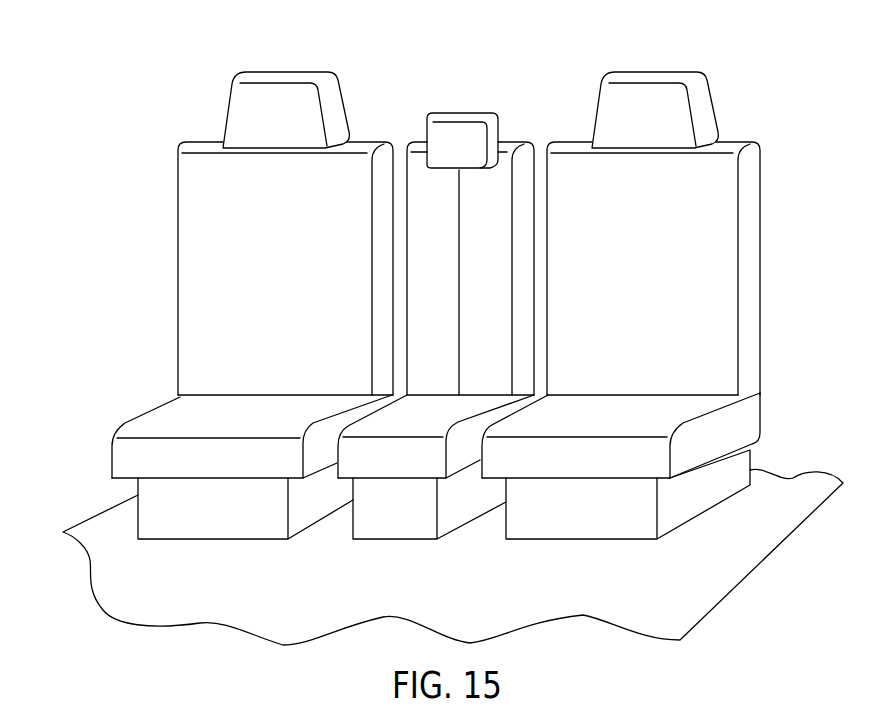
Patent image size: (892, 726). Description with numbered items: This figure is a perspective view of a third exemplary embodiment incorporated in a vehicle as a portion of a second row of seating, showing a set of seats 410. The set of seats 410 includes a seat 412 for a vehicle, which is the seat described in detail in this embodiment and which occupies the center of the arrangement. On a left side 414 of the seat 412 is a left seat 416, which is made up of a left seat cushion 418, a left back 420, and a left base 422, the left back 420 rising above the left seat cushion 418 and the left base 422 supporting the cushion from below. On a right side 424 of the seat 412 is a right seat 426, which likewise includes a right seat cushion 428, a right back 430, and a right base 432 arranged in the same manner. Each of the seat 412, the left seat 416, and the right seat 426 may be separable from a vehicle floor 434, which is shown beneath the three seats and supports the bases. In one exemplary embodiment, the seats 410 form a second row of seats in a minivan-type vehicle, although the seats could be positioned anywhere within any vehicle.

The set of seats 410 is at (404, 74).
The seat 412 is at (515, 127).
The left side 414 is at (458, 460).
The left seat 416 is at (732, 123).
The left seat cushion 418 is at (752, 417).
The left back 420 is at (750, 244).
The left base 422 is at (702, 503).
The right side 424 is at (343, 528).
The right seat 426 is at (212, 128).
The right seat cushion 428 is at (112, 453).
The right back 430 is at (178, 282).
The right base 432 is at (180, 542).
The vehicle floor 434 is at (662, 594).